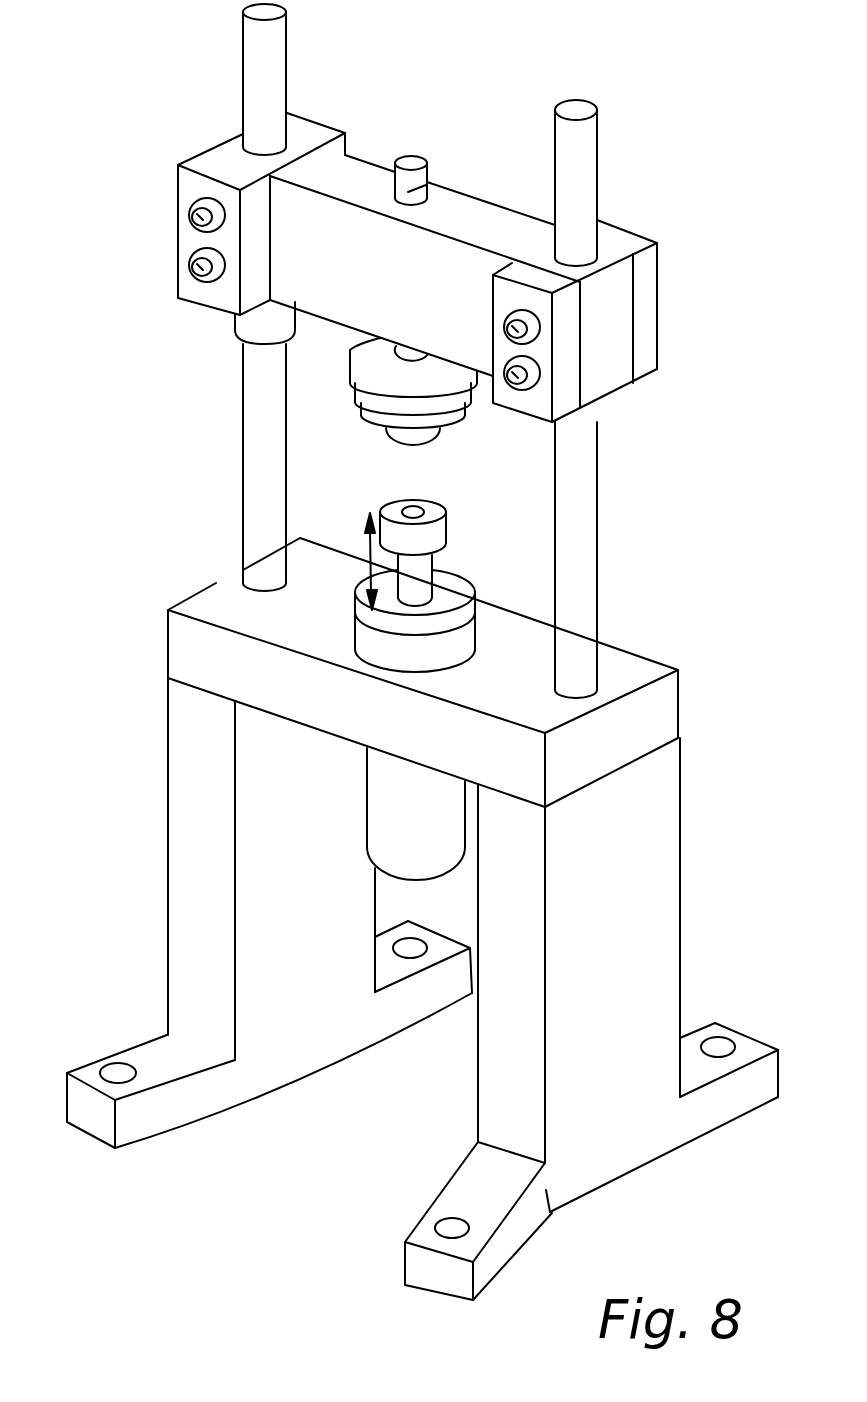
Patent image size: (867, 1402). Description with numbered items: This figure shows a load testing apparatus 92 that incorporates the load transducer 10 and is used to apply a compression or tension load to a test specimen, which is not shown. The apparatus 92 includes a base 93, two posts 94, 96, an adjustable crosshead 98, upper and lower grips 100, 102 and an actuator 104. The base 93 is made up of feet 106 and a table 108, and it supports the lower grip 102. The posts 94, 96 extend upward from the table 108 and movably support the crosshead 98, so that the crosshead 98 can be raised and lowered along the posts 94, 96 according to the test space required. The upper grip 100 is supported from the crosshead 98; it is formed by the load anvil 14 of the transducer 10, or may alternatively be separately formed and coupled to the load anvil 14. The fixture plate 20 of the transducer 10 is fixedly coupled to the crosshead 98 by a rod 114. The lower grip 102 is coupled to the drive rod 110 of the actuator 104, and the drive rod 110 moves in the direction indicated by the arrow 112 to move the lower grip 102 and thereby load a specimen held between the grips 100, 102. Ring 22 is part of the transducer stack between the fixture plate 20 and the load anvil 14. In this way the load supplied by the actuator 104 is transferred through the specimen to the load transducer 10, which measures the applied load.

The load transducer 10 is at (340, 395).
The load anvil 14 is at (405, 453).
The fixture plate 20 is at (358, 378).
The die ring 22 is at (362, 403).
The load testing apparatus 92 is at (720, 386).
The base 93 is at (702, 934).
The post 94 is at (260, 77).
The post 96 is at (578, 182).
The adjustable crosshead 98 is at (650, 298).
The upper grip 100 is at (455, 453).
The lower grip 102 is at (434, 541).
The actuator 104 is at (385, 803).
The feet 106 is at (642, 862).
The table 108 is at (536, 697).
The drive rod 110 is at (418, 581).
The arrow 112 is at (375, 560).
The rod 114 is at (440, 187).